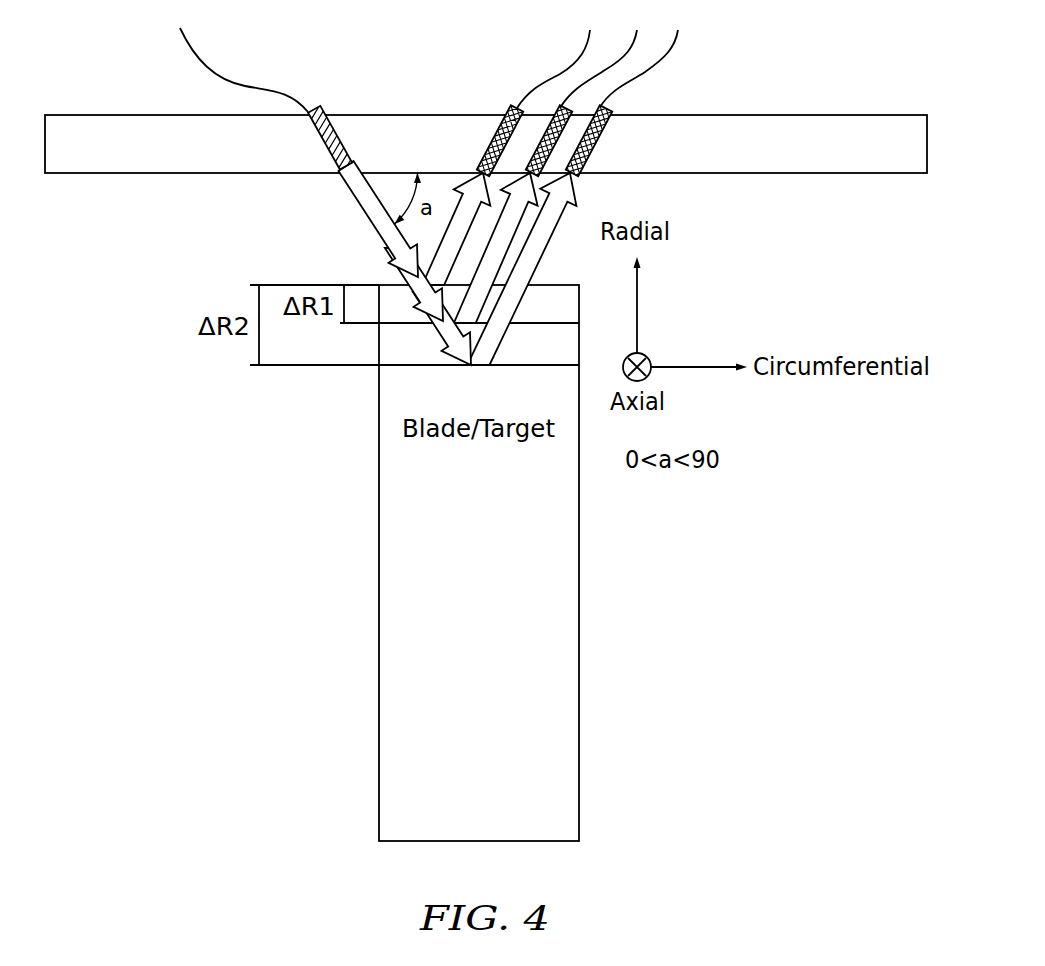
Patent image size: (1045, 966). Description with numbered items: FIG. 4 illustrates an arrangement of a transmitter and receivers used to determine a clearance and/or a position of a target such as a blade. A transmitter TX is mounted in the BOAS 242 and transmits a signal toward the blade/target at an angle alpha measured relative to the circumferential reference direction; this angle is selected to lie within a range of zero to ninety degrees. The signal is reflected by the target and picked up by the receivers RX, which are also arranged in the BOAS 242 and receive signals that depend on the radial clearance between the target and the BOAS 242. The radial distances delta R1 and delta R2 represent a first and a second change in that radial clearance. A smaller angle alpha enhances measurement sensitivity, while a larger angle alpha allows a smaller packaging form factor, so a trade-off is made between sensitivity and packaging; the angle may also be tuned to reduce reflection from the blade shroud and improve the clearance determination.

The BOAS 242 is at (152, 160).
The transmitter TX is at (330, 129).
The receivers RX is at (568, 165).